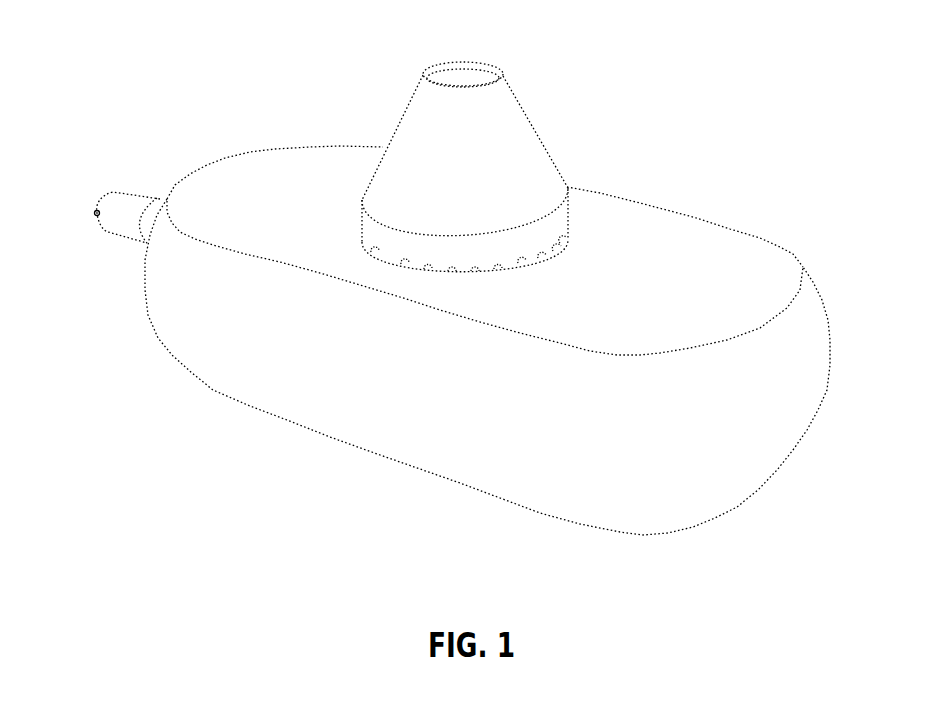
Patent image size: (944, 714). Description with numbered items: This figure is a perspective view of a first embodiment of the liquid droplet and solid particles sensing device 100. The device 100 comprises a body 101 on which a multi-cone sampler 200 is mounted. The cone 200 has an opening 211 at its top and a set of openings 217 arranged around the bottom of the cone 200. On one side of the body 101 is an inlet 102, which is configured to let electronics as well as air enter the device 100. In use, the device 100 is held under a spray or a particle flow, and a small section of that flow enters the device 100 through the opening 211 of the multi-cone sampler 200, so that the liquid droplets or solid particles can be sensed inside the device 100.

The liquid droplet and solid particles sensing device 100 is at (216, 115).
The body 101 is at (322, 157).
The inlet 102 is at (130, 205).
The multi-cone sampler 200 is at (559, 120).
The opening 211 is at (455, 78).
The set of openings 217 is at (387, 258).